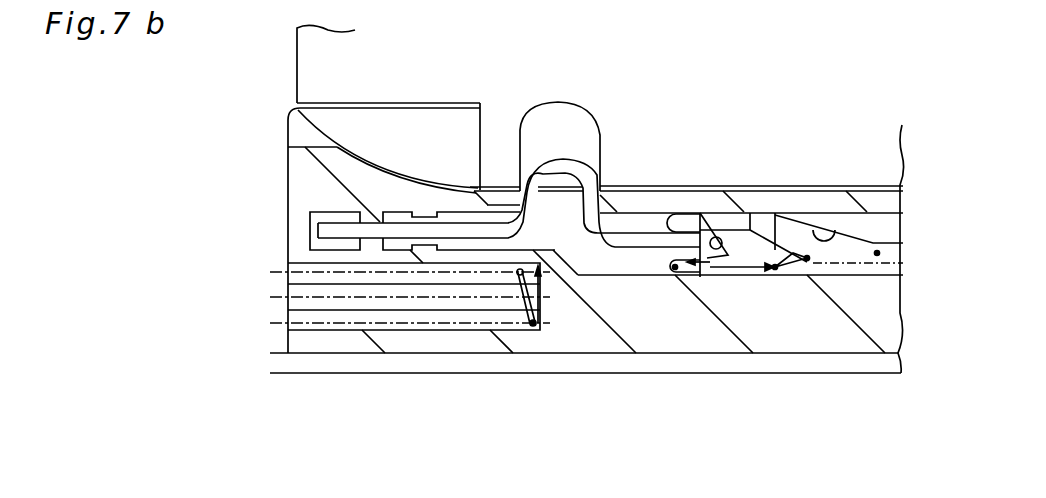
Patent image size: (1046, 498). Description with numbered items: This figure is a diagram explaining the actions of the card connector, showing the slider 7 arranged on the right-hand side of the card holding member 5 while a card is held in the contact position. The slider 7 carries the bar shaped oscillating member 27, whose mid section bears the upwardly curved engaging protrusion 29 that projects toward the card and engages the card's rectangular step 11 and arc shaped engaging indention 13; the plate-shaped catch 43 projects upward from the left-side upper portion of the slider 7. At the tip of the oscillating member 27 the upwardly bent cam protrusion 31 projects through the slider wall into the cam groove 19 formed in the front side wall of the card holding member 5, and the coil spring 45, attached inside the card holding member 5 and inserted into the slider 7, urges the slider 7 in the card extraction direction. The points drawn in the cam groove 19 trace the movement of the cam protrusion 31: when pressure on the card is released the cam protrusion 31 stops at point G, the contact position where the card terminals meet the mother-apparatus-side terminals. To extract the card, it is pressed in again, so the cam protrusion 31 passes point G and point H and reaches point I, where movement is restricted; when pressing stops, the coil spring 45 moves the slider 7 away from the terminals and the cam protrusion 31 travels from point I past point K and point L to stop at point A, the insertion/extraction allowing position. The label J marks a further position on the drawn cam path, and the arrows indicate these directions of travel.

The step 11 is at (480, 140).
The catch 43 is at (393, 122).
The engaging indention 13 is at (522, 143).
The engaging protrusion 29 is at (573, 160).
The oscillating member 27 is at (647, 228).
The cam protrusion 31 is at (730, 226).
The cam groove 19 is at (837, 237).
The coil spring 45 is at (533, 325).
The card holding member 5 is at (698, 374).
The slider 7 is at (797, 342).
The point J is at (733, 258).
The point I is at (673, 271).
The point H is at (712, 248).
The point G is at (730, 272).
The point K is at (775, 270).
The point L is at (807, 262).
The point A is at (877, 256).